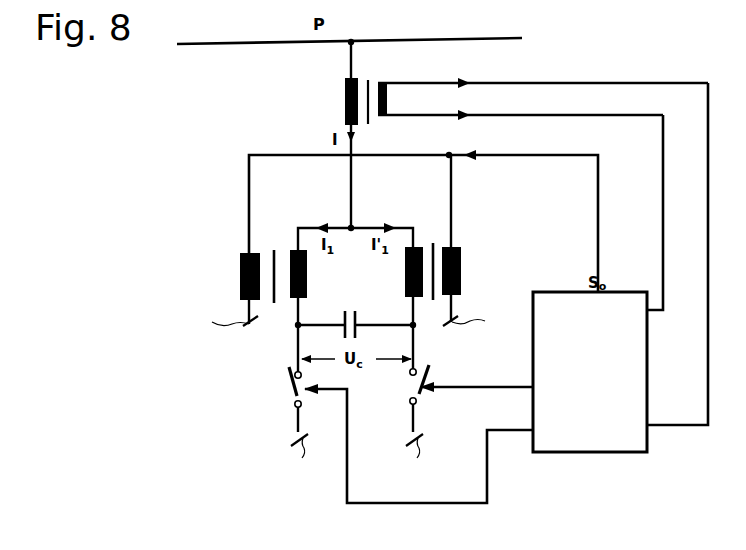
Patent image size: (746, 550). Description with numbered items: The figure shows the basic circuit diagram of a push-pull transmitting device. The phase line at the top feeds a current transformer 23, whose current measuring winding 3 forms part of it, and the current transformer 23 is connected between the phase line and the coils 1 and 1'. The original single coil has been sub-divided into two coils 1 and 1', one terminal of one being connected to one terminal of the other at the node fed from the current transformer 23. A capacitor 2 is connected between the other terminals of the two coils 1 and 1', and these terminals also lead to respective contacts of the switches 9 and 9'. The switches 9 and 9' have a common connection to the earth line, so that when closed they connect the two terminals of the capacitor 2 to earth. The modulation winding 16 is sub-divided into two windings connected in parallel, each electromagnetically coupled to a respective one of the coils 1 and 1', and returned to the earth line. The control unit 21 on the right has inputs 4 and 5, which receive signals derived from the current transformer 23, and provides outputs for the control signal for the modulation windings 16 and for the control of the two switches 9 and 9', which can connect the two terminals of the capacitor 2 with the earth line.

The current transformer 23 is at (362, 78).
The current measuring winding 3 is at (390, 100).
The coil 1 is at (313, 260).
The coil 1' is at (391, 253).
The modulation winding 16 is at (240, 272).
The capacitor 2 is at (358, 318).
The switch 9 is at (393, 435).
The switch 9' is at (469, 421).
The input 4 is at (670, 296).
The input 5 is at (673, 424).
The control unit 21 is at (586, 452).